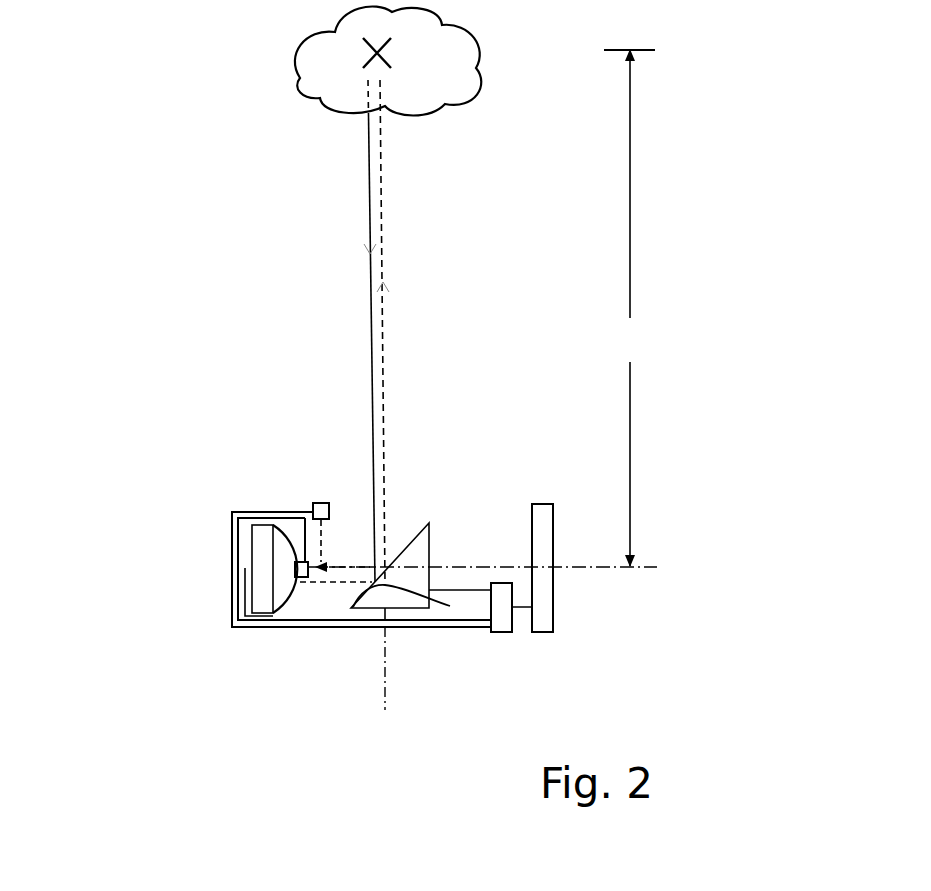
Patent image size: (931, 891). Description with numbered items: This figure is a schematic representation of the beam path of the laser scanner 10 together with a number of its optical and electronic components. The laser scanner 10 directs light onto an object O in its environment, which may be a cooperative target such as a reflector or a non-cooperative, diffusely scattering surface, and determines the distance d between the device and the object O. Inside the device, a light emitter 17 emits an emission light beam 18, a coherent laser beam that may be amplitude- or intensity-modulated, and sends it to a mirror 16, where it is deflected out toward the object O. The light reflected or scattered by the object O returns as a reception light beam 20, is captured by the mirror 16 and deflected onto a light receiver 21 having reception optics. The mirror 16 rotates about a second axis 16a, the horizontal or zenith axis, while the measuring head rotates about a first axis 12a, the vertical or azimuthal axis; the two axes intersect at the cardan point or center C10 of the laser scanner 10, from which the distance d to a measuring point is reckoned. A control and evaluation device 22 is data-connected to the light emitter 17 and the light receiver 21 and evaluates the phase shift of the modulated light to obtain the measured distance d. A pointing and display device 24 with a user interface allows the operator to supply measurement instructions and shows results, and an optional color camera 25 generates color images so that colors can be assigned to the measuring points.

The laser scanner 10 is at (203, 210).
The object O is at (478, 45).
The distance d is at (629, 308).
The reception light beam 20 is at (370, 280).
The emission light beam 18 is at (385, 242).
The control and evaluation device 22 is at (228, 567).
The light receiver 21 is at (262, 616).
The color camera 25 is at (305, 578).
The light emitter 17 is at (321, 502).
The second axis 16a is at (662, 567).
The first axis 12a is at (382, 690).
The mirror 16 is at (450, 606).
The pointing and display device 24 is at (557, 612).
The center C10 is at (412, 542).